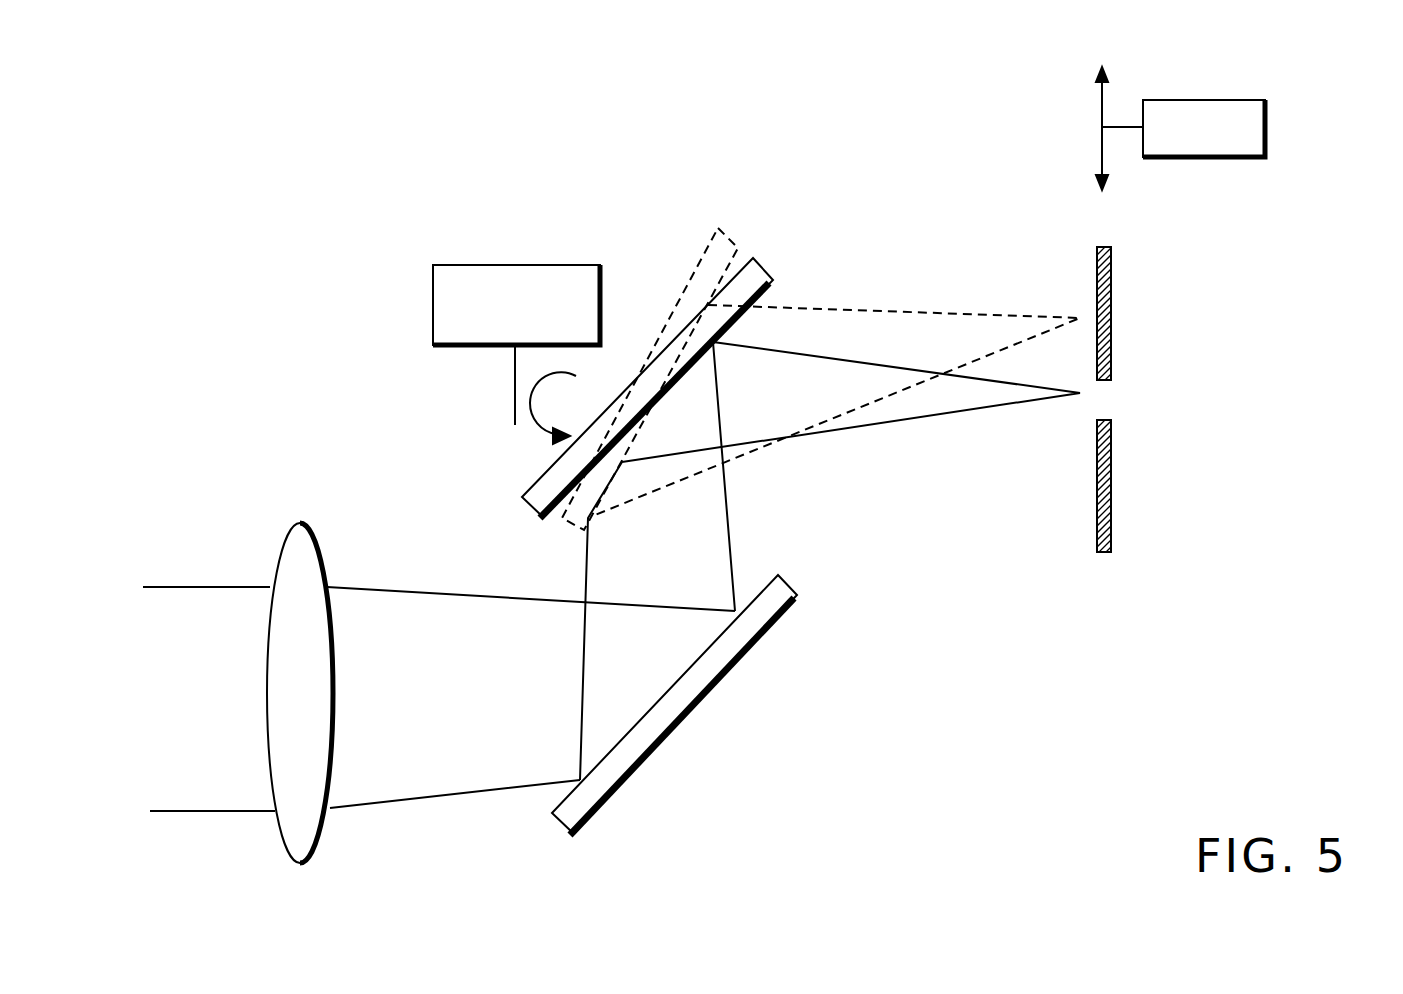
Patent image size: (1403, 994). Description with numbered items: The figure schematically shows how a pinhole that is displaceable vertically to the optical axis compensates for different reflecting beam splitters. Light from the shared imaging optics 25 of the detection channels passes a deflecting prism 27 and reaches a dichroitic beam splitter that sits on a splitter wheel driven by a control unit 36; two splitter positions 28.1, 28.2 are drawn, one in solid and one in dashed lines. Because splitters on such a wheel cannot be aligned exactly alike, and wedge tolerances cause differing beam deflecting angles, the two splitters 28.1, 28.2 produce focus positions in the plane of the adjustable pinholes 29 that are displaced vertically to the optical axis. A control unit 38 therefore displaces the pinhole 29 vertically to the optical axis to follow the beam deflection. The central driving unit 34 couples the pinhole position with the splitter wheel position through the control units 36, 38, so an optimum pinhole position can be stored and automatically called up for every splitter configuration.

The imaging optics 25 is at (323, 567).
The deflecting prism 27 is at (707, 693).
The dichroitic beam splitter 28.1 is at (770, 273).
The dichroitic beam splitter 28.2 is at (723, 233).
The adjustable pinholes 29 is at (1112, 282).
The central driving unit 34 is at (517, 252).
The local driving unit 36 is at (578, 265).
The local driving unit 38 is at (1195, 98).